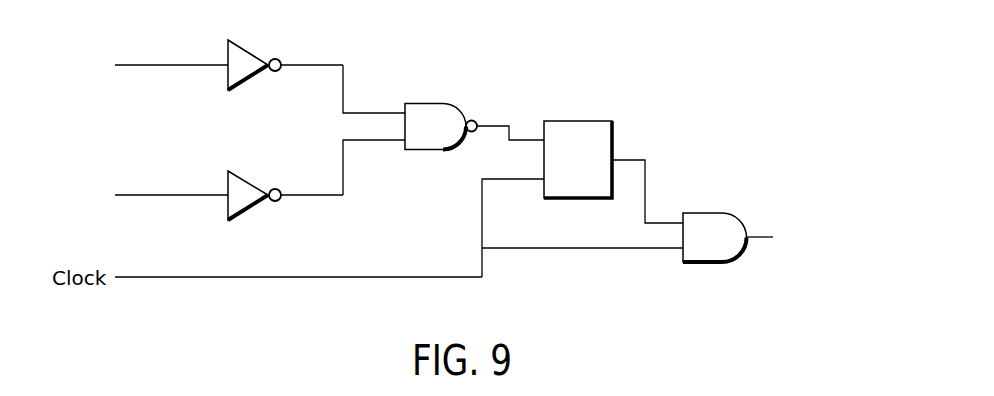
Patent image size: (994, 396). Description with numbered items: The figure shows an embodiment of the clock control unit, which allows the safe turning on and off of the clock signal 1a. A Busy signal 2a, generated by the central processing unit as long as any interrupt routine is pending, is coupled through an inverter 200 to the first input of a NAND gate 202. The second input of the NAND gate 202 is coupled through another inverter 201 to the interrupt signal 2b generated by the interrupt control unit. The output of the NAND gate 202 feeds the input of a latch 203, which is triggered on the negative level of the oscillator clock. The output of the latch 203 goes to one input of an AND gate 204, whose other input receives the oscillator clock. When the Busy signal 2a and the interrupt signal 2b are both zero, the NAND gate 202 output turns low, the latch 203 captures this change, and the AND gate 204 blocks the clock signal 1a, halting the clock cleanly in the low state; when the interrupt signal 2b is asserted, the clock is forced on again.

The Busy signal 2a is at (168, 63).
The inverter 200 is at (246, 46).
The interrupt signal 2b is at (170, 193).
The inverter 201 is at (247, 175).
The NAND gate 202 is at (455, 104).
The latch 203 is at (578, 121).
The clock signal 1a is at (752, 234).
The AND gate 204 is at (706, 263).